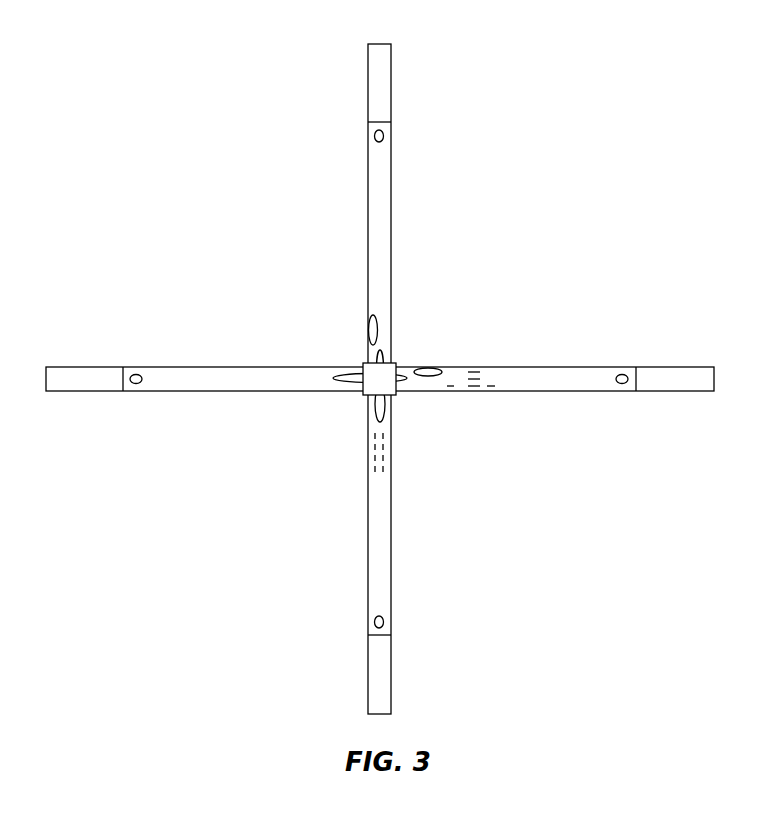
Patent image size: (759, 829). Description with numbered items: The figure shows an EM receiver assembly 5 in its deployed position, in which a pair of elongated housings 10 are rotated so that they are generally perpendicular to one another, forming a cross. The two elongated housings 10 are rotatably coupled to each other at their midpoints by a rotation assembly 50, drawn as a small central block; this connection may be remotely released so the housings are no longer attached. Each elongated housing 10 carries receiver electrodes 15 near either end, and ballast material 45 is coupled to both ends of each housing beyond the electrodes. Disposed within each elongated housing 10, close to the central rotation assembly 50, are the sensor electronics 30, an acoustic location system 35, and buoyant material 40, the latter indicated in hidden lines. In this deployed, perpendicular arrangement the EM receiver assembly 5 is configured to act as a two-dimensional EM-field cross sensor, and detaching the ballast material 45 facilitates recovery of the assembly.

The EM receiver assembly 5 is at (575, 191).
The elongated housing 10 is at (368, 238).
The receiver electrode 15 is at (384, 135).
The sensor electronics 30 is at (347, 388).
The acoustic location system 35 is at (369, 330).
The buoyant material 40 is at (388, 438).
The ballast material 45 is at (368, 83).
The rotation assembly 50 is at (365, 397).